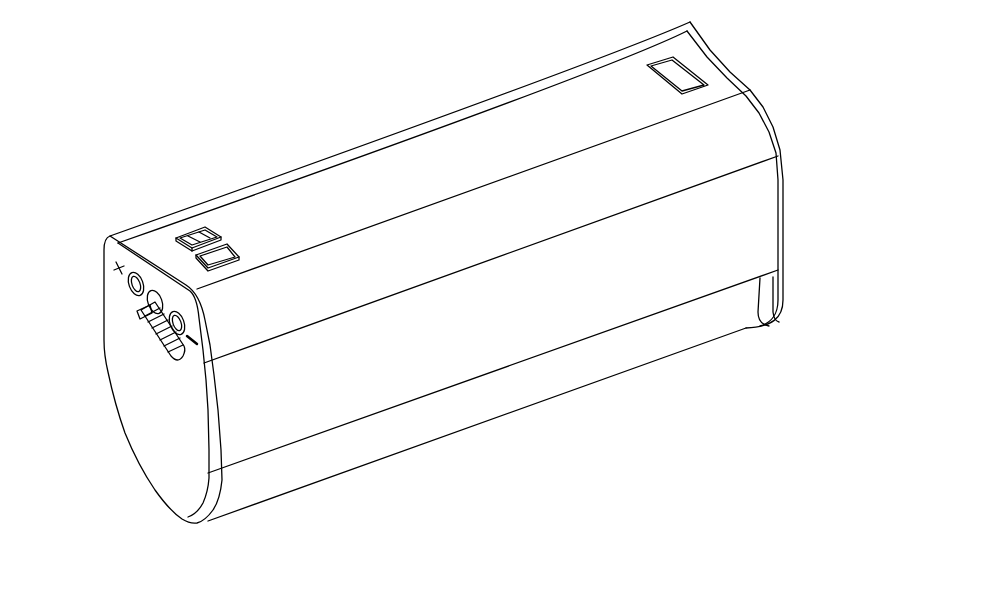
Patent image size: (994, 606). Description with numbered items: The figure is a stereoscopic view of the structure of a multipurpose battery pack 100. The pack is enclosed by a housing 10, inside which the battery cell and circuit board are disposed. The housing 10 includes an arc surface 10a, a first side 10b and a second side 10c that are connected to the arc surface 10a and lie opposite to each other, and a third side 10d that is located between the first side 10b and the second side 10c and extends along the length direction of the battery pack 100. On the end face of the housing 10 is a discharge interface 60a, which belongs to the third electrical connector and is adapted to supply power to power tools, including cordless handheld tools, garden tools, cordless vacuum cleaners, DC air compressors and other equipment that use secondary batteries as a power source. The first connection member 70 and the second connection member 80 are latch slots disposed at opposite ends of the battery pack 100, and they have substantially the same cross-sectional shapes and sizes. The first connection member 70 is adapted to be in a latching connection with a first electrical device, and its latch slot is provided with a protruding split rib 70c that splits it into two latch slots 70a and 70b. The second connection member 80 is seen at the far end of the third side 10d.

The battery pack 100 is at (357, 33).
The housing 10 is at (320, 155).
The arc surface 10a is at (413, 448).
The first side 10b is at (487, 332).
The second side 10c is at (104, 304).
The third side 10d is at (440, 182).
The discharge interface 60a is at (147, 309).
The first connection member 70 is at (112, 171).
The latch slot 70a is at (186, 232).
The latch slot 70b is at (200, 252).
The protruding split rib 70c is at (216, 229).
The second connection member 80 is at (676, 80).